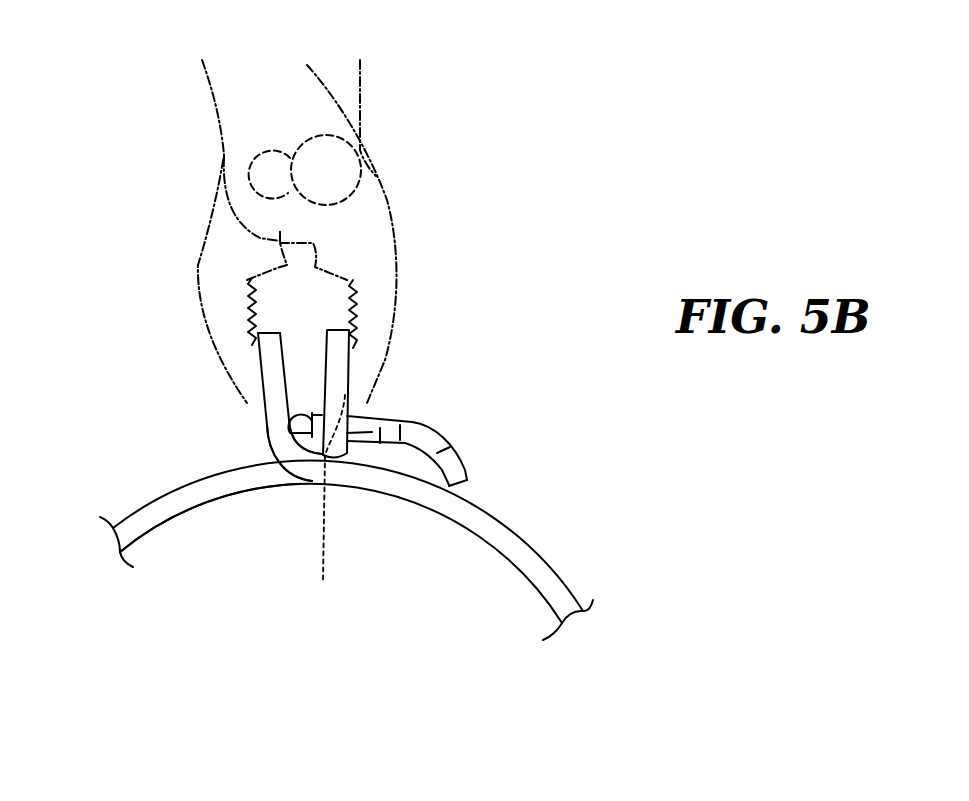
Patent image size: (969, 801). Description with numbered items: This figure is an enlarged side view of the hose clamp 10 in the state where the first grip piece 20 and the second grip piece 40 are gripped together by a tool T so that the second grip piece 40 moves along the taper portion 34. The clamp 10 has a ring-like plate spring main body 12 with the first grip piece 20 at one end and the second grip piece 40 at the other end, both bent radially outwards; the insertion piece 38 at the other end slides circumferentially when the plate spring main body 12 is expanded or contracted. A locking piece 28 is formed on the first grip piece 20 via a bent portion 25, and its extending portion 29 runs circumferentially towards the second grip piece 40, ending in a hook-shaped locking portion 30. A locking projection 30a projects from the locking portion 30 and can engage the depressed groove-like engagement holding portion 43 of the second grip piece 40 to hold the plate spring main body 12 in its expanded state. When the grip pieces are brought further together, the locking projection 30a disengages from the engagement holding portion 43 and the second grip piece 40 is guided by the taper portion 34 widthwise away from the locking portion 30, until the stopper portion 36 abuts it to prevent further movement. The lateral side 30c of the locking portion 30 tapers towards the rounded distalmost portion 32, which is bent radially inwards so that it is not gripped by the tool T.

The tool T is at (378, 177).
The clamp 10 is at (373, 550).
The plate spring main body 12 is at (503, 543).
The first grip piece 20 is at (226, 496).
The bent portion 25 is at (287, 412).
The locking piece 28 is at (428, 451).
The extending portion 29 is at (367, 413).
The locking portion 30 is at (408, 425).
The locking projection 30a is at (372, 450).
The lateral side 30c is at (410, 443).
The distalmost portion 32 is at (453, 462).
The taper portion 34 is at (317, 453).
The stopper portion 36 is at (280, 457).
The insertion piece 38 is at (178, 507).
The second grip piece 40 is at (338, 315).
The engagement holding portion 43 is at (325, 505).